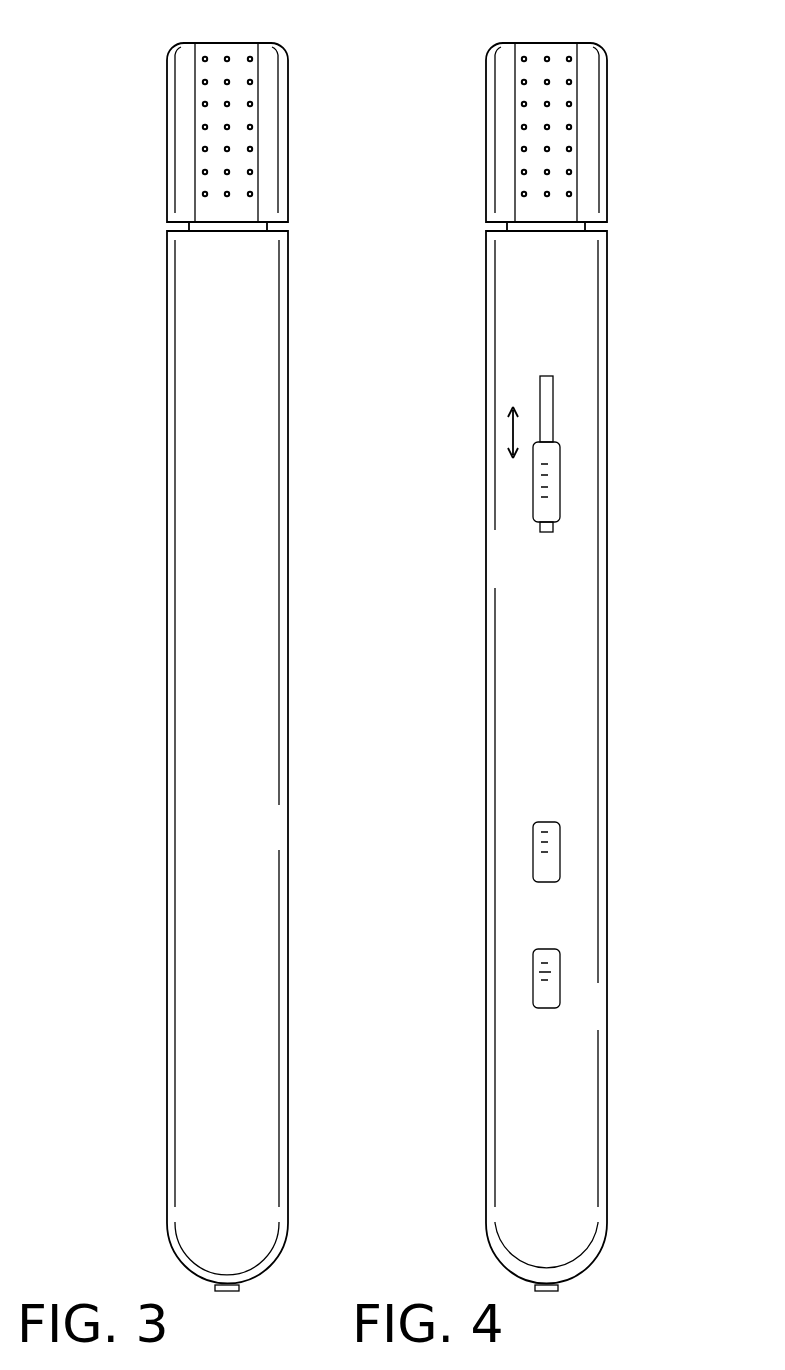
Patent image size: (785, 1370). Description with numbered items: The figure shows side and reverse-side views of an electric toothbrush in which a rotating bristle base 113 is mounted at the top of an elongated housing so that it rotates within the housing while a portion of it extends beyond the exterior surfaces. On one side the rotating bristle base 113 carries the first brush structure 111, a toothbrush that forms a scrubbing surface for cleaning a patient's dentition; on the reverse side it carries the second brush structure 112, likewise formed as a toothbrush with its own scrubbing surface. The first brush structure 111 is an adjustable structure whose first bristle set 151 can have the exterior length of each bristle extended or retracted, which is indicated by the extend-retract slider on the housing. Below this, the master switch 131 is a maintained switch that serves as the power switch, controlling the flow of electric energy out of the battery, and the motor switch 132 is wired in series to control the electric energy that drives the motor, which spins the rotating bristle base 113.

In FIG. 3, the rotating bristle base 113 is at (283, 44).
In FIG. 4, the rotating bristle base 113 is at (608, 50).
In FIG. 3, the first brush structure 111 is at (228, 147).
In FIG. 4, the second brush structure 112 is at (550, 150).
In FIG. 4, the first bristle set 151 is at (553, 482).
In FIG. 4, the motor switch 132 is at (552, 858).
In FIG. 4, the master switch 131 is at (552, 971).